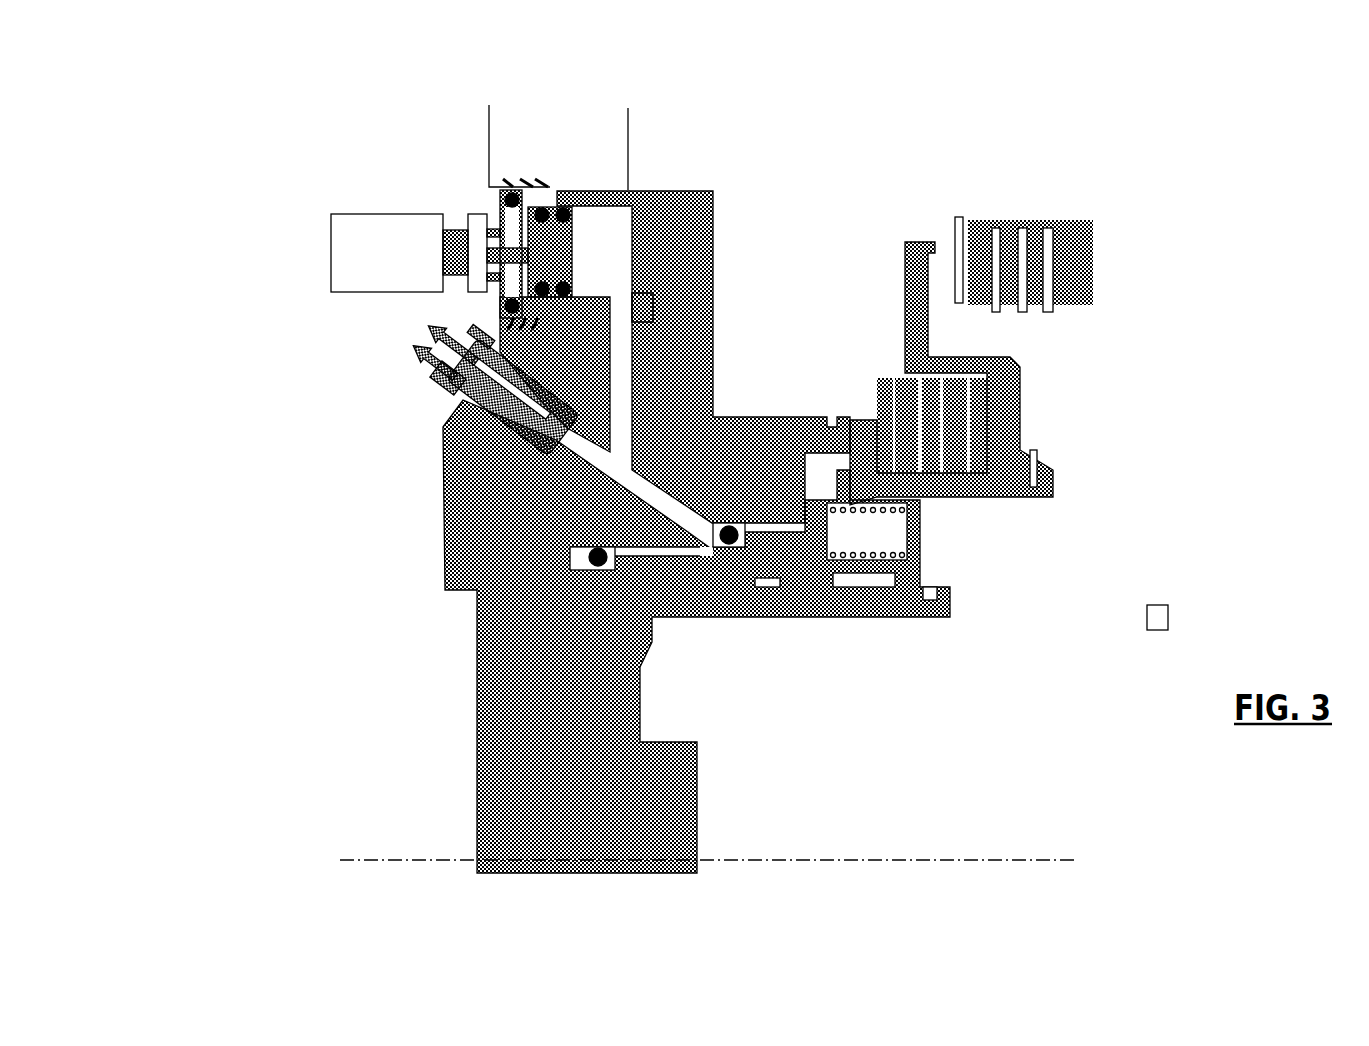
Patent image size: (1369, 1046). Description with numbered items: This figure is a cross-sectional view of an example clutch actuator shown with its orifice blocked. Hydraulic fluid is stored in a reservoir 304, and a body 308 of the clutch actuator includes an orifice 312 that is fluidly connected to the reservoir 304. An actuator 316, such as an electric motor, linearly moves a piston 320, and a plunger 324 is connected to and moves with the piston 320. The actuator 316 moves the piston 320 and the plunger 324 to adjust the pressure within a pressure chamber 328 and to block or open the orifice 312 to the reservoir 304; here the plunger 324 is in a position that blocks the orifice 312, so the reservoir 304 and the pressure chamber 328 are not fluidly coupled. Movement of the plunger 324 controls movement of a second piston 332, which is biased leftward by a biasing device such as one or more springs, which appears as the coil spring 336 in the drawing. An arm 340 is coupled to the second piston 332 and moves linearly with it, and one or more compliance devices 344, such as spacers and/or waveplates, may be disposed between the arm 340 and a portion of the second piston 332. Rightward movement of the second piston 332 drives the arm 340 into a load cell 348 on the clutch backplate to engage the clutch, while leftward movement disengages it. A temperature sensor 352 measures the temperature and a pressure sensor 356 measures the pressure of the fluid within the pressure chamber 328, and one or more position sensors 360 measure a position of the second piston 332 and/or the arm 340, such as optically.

The reservoir 304 is at (617, 148).
The body 308 is at (490, 517).
The orifice 312 is at (548, 192).
The actuator 316 is at (330, 255).
The piston 320 is at (460, 228).
The plunger 324 is at (553, 245).
The pressure chamber 328 is at (605, 247).
The second piston 332 is at (686, 575).
The spring 336 is at (862, 557).
The arm 340 is at (1000, 457).
The compliance devices 344 is at (943, 473).
The load cell 348 is at (1080, 305).
The temperature sensor 352 is at (655, 305).
The pressure sensor 356 is at (445, 382).
The position sensors 360 is at (1170, 612).